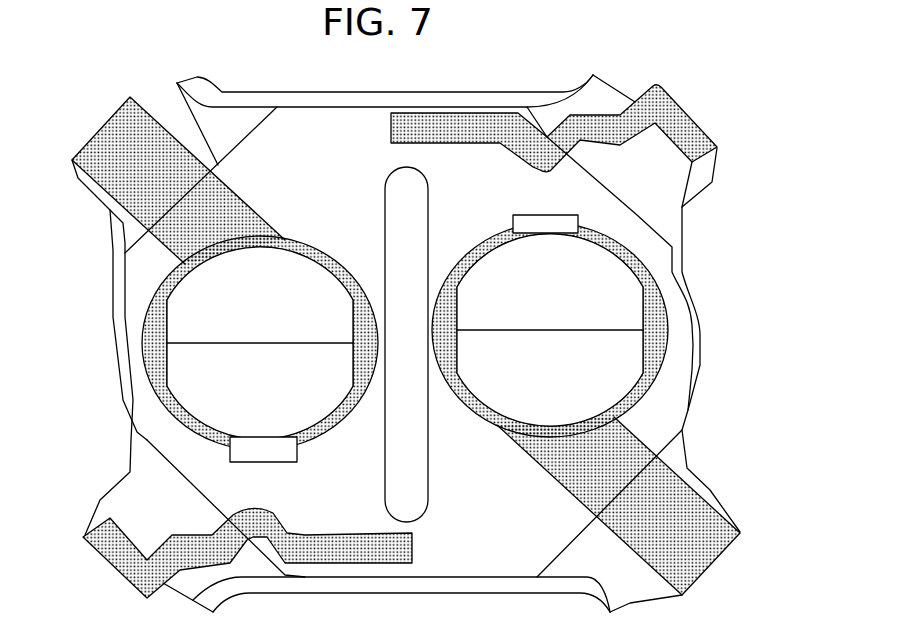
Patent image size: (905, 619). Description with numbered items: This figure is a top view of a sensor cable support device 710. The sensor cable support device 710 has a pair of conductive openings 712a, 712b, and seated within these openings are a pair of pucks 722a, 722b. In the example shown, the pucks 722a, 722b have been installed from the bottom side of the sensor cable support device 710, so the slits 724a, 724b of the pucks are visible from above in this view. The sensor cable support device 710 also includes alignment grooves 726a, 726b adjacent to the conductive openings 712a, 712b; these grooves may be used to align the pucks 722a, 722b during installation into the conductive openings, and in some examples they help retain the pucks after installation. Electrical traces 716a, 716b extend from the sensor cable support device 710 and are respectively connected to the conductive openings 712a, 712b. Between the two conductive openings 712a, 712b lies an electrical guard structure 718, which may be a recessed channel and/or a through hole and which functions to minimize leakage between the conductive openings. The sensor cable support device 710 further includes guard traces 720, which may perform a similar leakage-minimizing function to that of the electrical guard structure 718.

The sensor cable support device 710 is at (535, 63).
The conductive opening 712a is at (656, 376).
The conductive opening 712b is at (160, 363).
The electrical trace 716a is at (700, 548).
The electrical trace 716b is at (118, 138).
The electrical guard structure 718 is at (420, 498).
The guard trace 720 is at (683, 117).
The puck 722a is at (630, 308).
The puck 722b is at (192, 297).
The slit 724a is at (574, 330).
The slit 724b is at (220, 342).
The alignment groove 726a is at (547, 214).
The alignment groove 726b is at (230, 463).